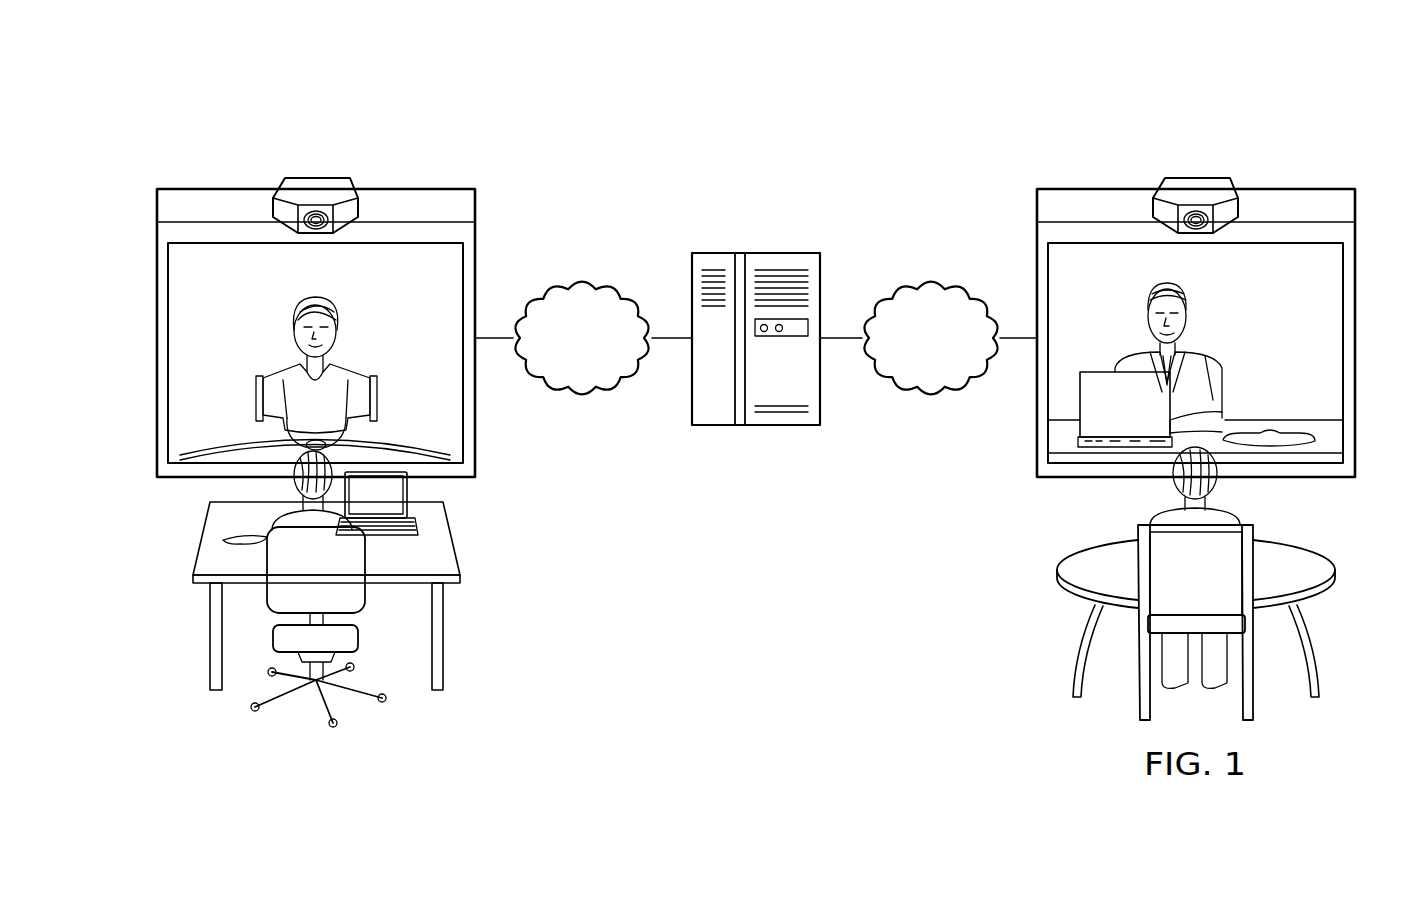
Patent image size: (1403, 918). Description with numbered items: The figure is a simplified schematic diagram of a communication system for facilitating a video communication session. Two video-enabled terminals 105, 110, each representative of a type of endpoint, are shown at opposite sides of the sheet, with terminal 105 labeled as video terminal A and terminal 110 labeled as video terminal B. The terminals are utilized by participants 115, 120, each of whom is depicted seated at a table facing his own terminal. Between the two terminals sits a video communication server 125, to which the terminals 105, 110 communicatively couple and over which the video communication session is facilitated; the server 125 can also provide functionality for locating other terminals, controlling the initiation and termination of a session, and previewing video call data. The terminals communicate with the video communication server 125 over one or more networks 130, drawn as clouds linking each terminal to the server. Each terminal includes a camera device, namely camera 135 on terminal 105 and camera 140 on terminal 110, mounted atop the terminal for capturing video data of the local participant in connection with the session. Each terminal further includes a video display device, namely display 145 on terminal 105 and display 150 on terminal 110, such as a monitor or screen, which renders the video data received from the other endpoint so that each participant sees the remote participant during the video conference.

The video-enabled terminal 105 is at (221, 186).
The video-enabled terminal 110 is at (1292, 186).
The participant 115 is at (272, 528).
The participant 120 is at (1225, 512).
The video communication server 125 is at (757, 253).
The network 130 is at (558, 285).
The camera device 135 is at (361, 207).
The camera device 140 is at (1152, 207).
The video display device 145 is at (456, 402).
The video display device 150 is at (1055, 403).